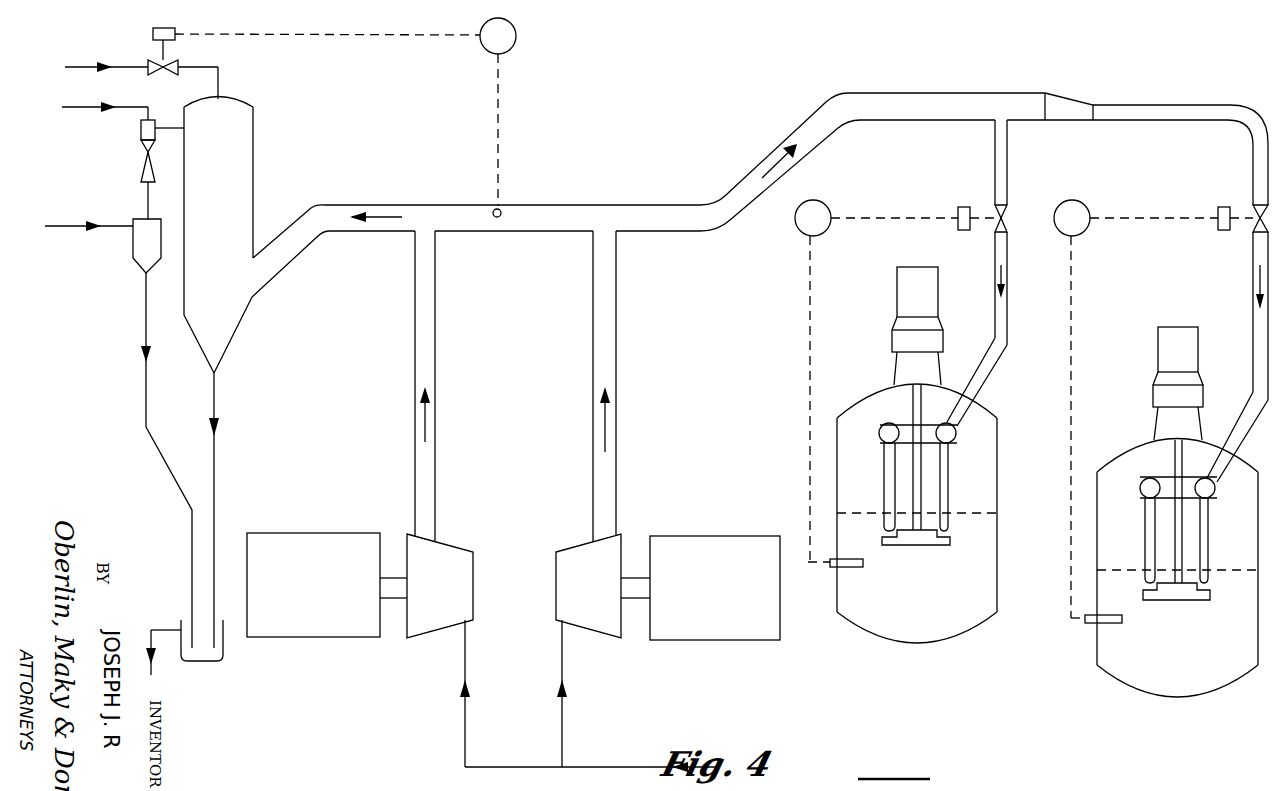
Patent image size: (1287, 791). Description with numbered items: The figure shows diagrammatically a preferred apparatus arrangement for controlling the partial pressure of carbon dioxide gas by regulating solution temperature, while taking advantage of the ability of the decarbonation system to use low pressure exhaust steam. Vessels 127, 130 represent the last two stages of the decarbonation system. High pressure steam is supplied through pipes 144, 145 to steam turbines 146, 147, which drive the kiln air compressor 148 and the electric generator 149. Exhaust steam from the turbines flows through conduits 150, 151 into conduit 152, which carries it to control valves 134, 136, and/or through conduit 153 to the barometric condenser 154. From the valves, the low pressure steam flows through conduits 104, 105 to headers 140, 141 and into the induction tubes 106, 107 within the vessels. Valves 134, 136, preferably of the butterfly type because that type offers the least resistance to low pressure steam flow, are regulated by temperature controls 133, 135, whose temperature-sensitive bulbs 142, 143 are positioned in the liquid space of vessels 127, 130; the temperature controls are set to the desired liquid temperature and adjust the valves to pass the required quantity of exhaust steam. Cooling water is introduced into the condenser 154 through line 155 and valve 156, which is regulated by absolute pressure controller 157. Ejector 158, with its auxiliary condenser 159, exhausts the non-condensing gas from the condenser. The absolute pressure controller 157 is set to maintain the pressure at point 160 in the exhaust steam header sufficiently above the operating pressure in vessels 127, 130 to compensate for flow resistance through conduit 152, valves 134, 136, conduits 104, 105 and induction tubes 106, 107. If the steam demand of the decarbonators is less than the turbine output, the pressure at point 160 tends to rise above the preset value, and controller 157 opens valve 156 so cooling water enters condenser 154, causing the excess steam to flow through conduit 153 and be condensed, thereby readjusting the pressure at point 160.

The conduit 104 is at (1002, 273).
The conduit 105 is at (1237, 357).
The induction tubes 106 is at (939, 465).
The induction tubes 107 is at (1196, 520).
The vessel 127 is at (917, 471).
The vessel 130 is at (1177, 526).
The temperature control 133 is at (1136, 397).
The valve 134 is at (1239, 202).
The temperature control 135 is at (876, 369).
The valve 136 is at (1006, 204).
The header 140 is at (1164, 476).
The header 141 is at (906, 421).
The temperature-sensitive bulb 142 is at (861, 572).
The temperature-sensitive bulb 143 is at (1121, 628).
The pipe 144 is at (638, 696).
The pipe 145 is at (511, 693).
The steam turbine 146 is at (603, 586).
The steam turbine 147 is at (426, 586).
The kiln air compressor 148 is at (715, 588).
The electric generator 149 is at (313, 585).
The conduit 150 is at (632, 386).
The conduit 151 is at (449, 386).
The conduit 152 is at (796, 162).
The conduit 153 is at (333, 235).
The barometric condenser 154 is at (199, 386).
The line 155 is at (106, 54).
The valve 156 is at (190, 63).
The absolute pressure controller 157 is at (371, 112).
The ejector 158 is at (123, 160).
The auxiliary condenser 159 is at (118, 433).
The point 160 is at (519, 200).